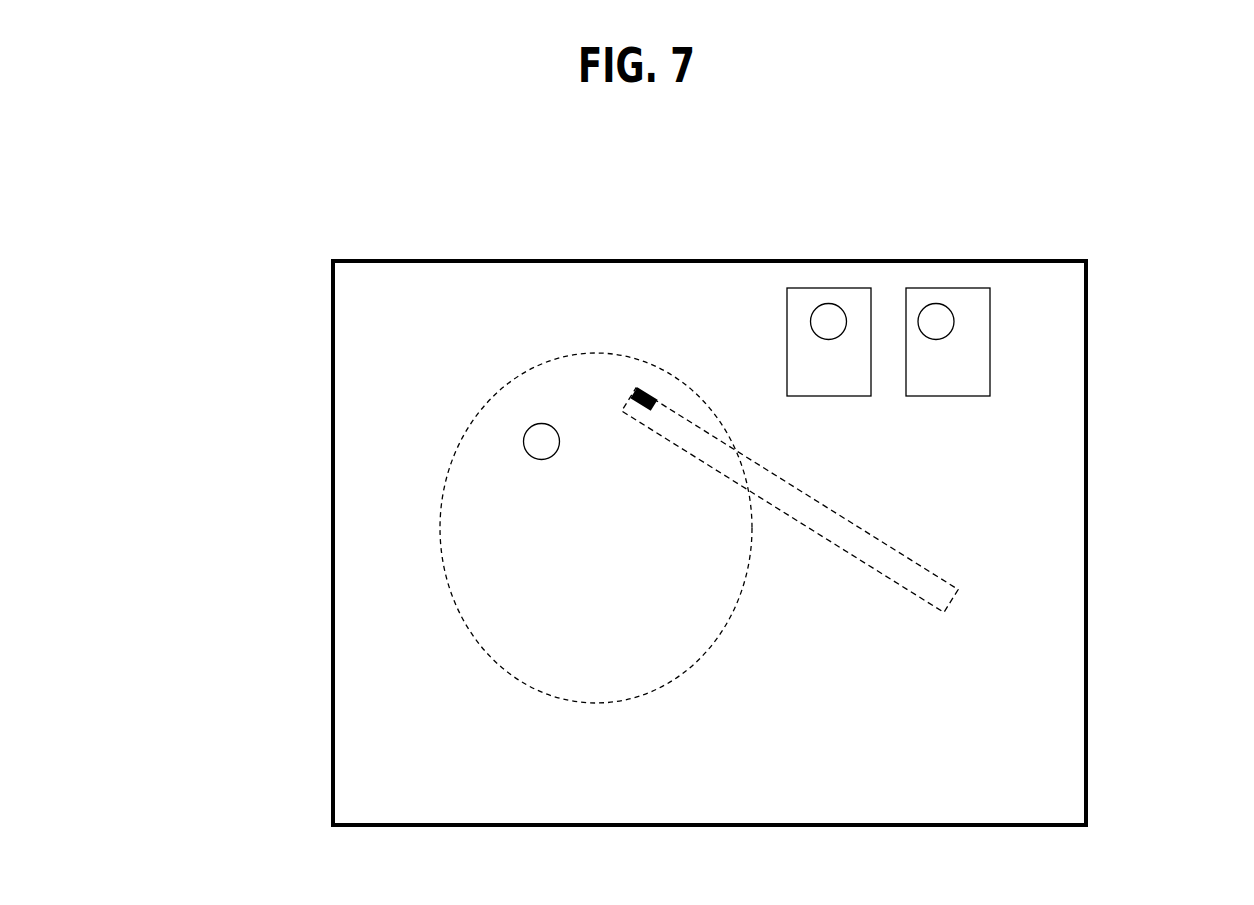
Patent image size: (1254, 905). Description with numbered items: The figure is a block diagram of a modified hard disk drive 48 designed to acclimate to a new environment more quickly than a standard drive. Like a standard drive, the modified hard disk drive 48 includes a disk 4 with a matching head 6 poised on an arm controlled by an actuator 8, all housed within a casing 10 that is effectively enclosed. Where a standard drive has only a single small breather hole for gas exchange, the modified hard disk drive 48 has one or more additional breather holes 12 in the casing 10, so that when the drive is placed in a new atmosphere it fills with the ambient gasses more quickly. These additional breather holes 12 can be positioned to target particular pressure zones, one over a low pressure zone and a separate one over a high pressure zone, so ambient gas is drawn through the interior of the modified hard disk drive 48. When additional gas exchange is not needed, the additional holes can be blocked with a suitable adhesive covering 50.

The modified hard disk drive 48 is at (1052, 202).
The casing 10 is at (332, 382).
The disk 4 is at (460, 610).
The breather hole 12 is at (533, 447).
The adhesive covering 50 is at (991, 340).
The actuator 8 is at (917, 580).
The head 6 is at (636, 392).